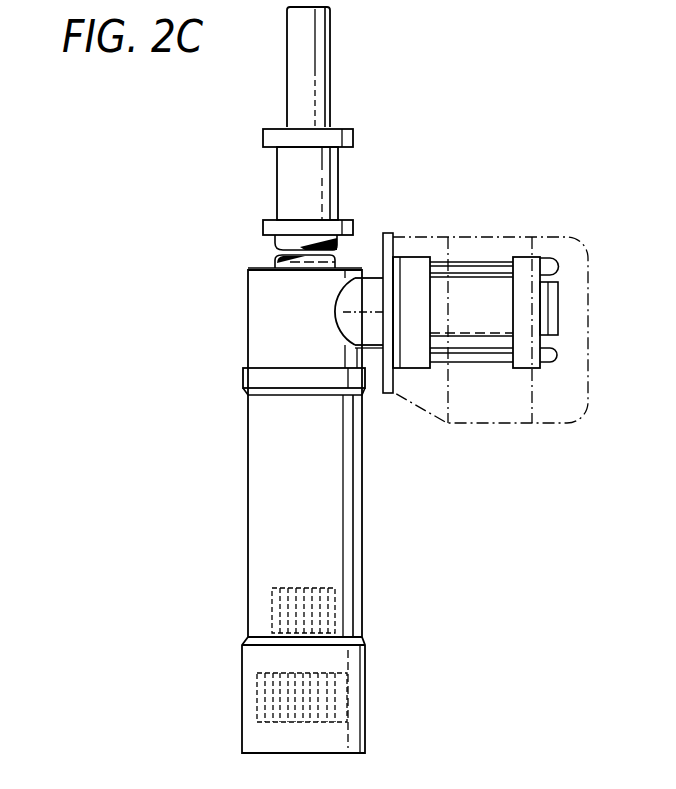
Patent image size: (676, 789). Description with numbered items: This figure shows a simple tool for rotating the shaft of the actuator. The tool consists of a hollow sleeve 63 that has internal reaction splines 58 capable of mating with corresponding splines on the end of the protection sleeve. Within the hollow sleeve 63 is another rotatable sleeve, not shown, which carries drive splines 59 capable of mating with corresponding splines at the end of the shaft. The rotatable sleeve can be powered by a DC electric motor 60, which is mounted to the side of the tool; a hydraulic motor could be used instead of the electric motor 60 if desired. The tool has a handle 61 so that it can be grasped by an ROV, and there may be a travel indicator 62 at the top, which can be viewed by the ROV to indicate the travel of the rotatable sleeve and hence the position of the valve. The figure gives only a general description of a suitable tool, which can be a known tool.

The internal reaction splines 58 is at (325, 700).
The drive splines 59 is at (327, 620).
The DC electric motor 60 is at (485, 316).
The handle 61 is at (288, 182).
The travel indicator 62 is at (308, 60).
The hollow sleeve 63 is at (267, 482).